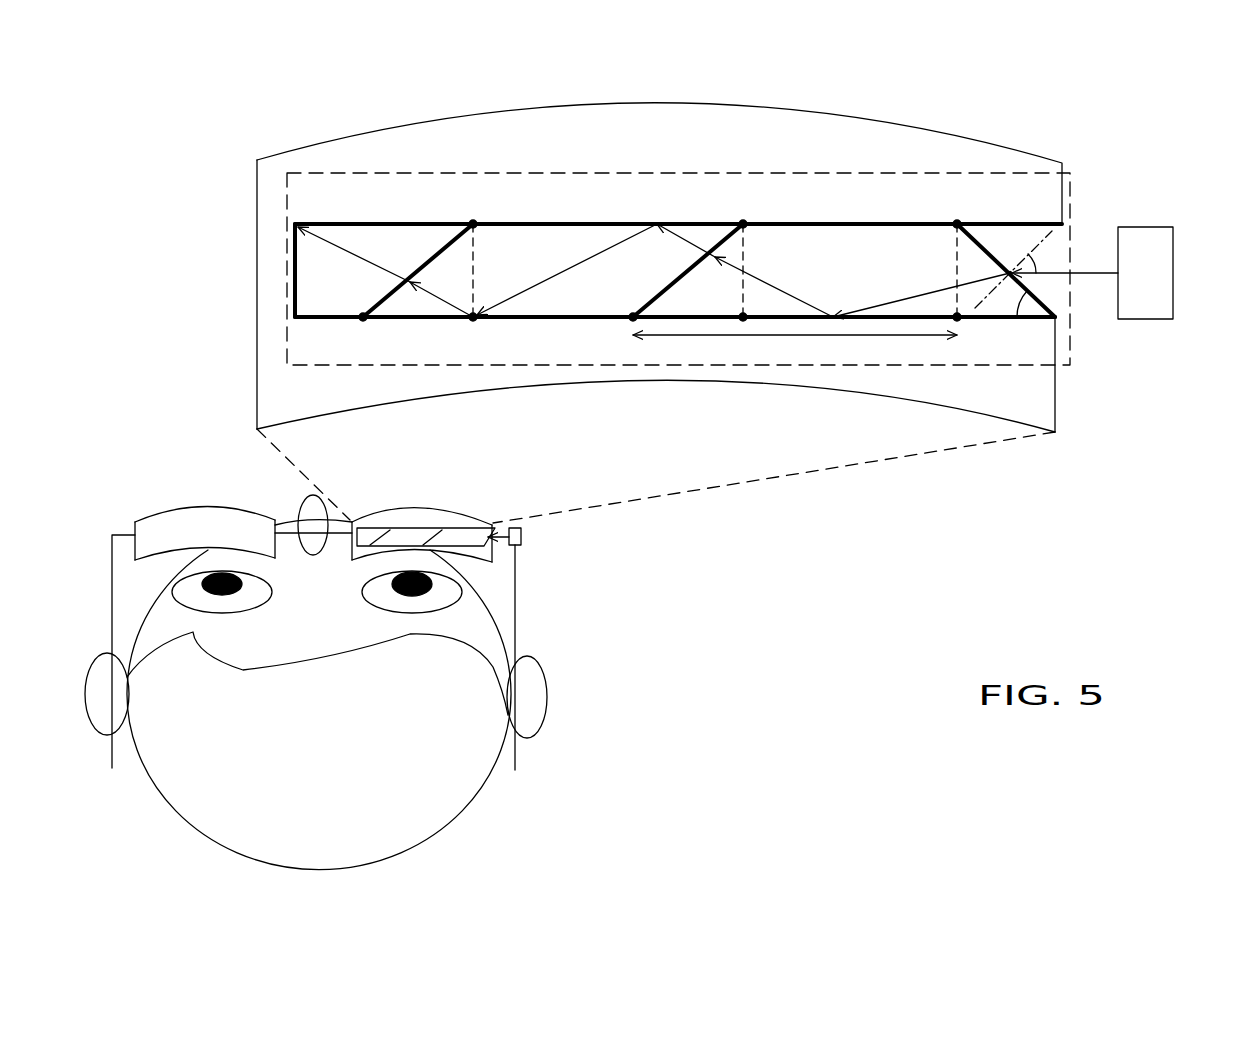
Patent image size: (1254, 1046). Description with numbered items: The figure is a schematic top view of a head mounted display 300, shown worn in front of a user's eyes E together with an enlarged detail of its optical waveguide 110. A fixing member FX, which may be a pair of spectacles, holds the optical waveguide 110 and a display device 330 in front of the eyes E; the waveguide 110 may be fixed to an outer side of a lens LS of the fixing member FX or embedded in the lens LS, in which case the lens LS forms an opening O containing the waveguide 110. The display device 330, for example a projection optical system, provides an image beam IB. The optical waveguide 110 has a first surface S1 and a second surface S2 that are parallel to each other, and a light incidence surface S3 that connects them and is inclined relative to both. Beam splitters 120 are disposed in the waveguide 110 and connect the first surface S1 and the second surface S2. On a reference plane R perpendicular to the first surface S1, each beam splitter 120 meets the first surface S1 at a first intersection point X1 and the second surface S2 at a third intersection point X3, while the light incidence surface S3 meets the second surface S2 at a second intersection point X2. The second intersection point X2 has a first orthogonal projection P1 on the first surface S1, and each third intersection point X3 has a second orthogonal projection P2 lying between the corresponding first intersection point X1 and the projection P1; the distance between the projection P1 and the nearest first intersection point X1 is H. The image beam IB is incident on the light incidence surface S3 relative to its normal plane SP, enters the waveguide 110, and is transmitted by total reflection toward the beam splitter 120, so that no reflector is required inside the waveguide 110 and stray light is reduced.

The head mounted display 300 is at (1145, 168).
The lens LS is at (980, 138).
The reference plane R is at (832, 173).
The optical waveguide 110 is at (372, 236).
The beam splitter 120 is at (432, 256).
The first surface S1 is at (567, 319).
The second surface S2 is at (567, 222).
The light incidence surface S3 is at (988, 246).
The opening O is at (293, 268).
The first intersection point X1 is at (363, 318).
The second intersection point X2 is at (957, 223).
The third intersection point X3 is at (474, 224).
The first orthogonal projection P1 is at (958, 318).
The second orthogonal projection P2 is at (473, 318).
The normal plane SP is at (1020, 262).
The distance H is at (795, 350).
The display device 330 is at (1160, 245).
The image beam IB is at (1090, 276).
The user's eyes E is at (460, 605).
The fixing member FX is at (515, 757).